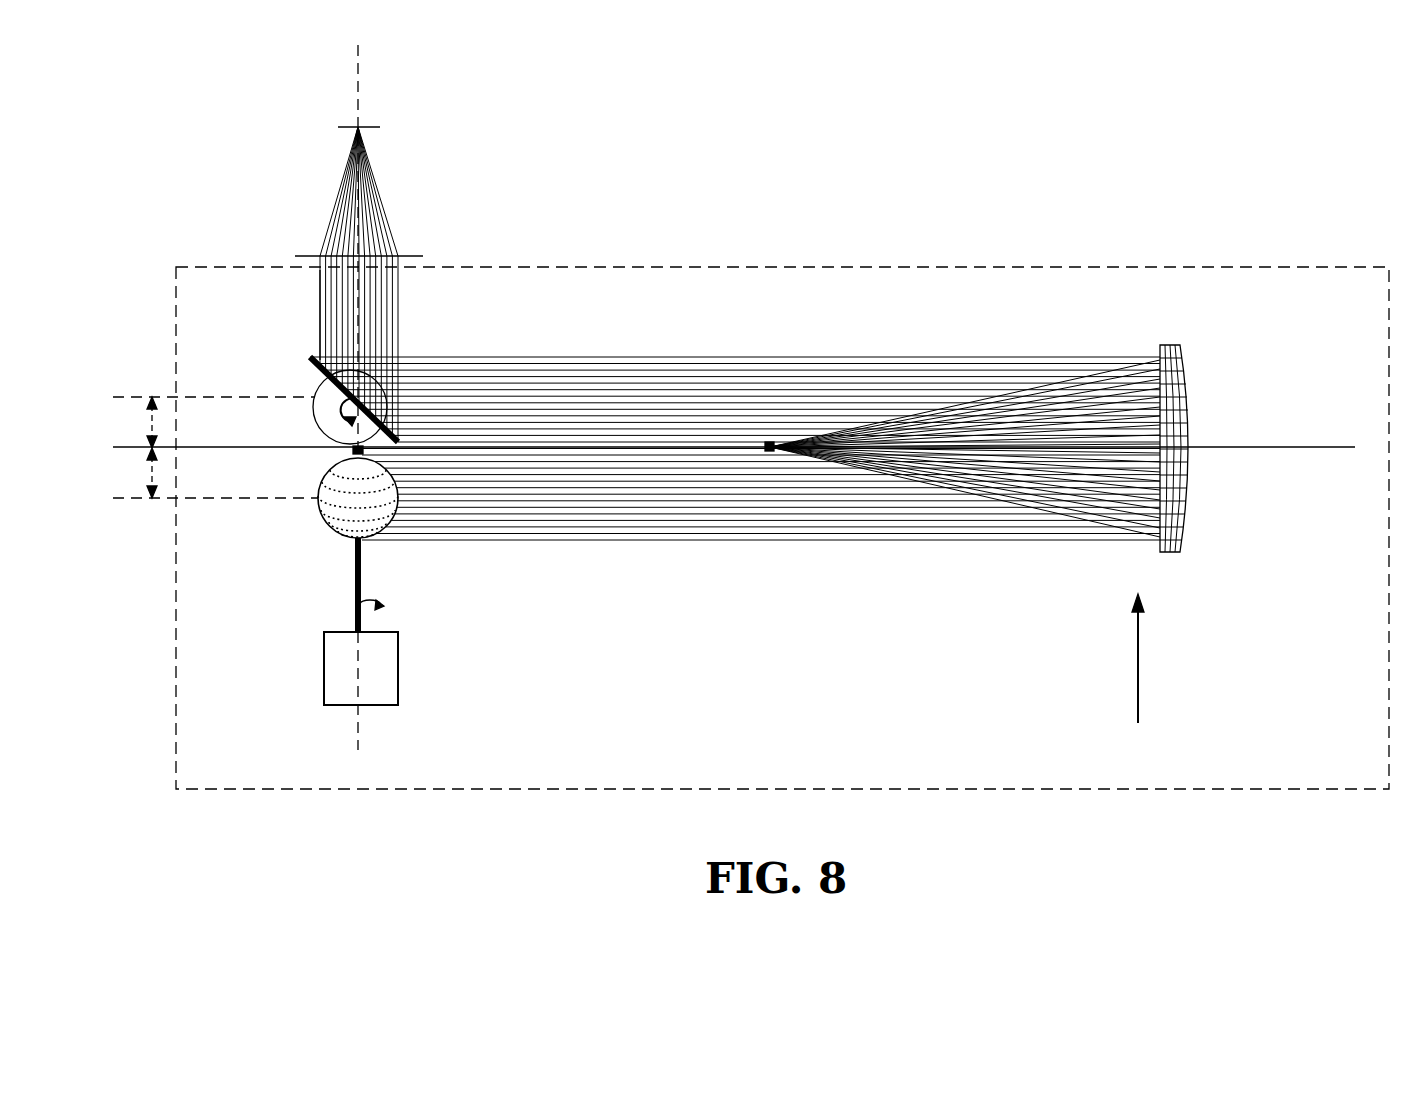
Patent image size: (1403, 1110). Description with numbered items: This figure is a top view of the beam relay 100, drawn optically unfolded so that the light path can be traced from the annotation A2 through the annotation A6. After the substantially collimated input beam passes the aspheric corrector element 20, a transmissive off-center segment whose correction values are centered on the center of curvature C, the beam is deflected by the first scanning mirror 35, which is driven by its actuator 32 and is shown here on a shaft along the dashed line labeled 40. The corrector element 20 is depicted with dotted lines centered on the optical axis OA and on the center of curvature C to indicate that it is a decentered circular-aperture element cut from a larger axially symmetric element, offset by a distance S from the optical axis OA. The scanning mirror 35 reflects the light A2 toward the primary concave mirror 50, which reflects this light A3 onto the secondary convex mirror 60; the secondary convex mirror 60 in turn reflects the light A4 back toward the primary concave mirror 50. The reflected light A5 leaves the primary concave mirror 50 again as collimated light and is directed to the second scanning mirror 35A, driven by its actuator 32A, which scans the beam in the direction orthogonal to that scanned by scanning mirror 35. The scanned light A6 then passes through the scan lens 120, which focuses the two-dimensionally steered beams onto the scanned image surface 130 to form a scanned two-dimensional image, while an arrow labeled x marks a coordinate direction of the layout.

The beam relay 100 is at (773, 171).
The scan lens 120 is at (297, 252).
The scanned image surface 130 is at (387, 122).
The scanned light A6 is at (318, 322).
The scanning mirror 35A is at (308, 357).
The actuator 32A is at (318, 425).
The center of curvature C is at (350, 452).
The decentering distance S is at (212, 447).
The aspheric corrector element 20 is at (320, 502).
The scanning mirror 35 is at (370, 548).
The actuator 32 is at (400, 655).
The rotation axis 40 is at (365, 747).
The reflected light A5 is at (742, 362).
The reflected light A2 is at (733, 537).
The reflected light A4 is at (1142, 380).
The reflected light A3 is at (1000, 510).
The secondary convex mirror 60 is at (765, 452).
The primary concave mirror 50 is at (1195, 485).
The optical axis OA is at (1305, 453).
The x axis direction x is at (1138, 662).